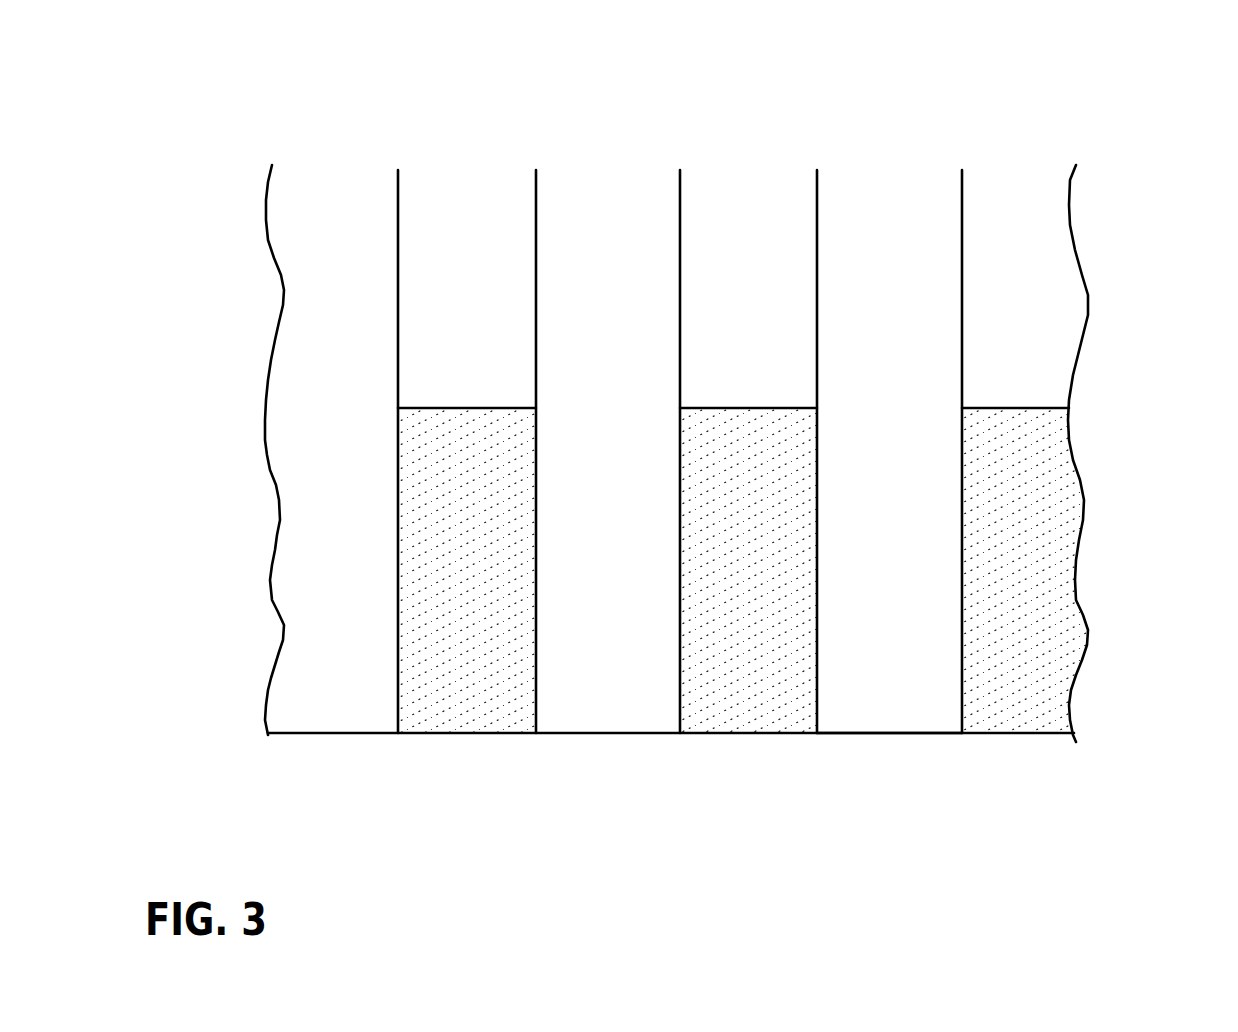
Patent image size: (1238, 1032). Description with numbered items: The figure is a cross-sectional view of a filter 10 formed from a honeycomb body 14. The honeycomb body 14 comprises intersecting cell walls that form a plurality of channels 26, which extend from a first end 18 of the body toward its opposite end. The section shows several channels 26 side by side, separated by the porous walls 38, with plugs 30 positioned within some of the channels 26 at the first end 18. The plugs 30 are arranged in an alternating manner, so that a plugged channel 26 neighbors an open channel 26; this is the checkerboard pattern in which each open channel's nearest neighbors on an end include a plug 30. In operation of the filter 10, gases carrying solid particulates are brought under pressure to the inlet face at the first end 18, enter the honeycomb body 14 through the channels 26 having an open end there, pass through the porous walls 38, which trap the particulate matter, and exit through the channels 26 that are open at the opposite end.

The filter 10 is at (1114, 64).
The honeycomb body 14 is at (1062, 161).
The first end 18 is at (607, 765).
The channels 26 is at (897, 688).
The plugs 30 is at (483, 702).
The walls 38 is at (962, 320).